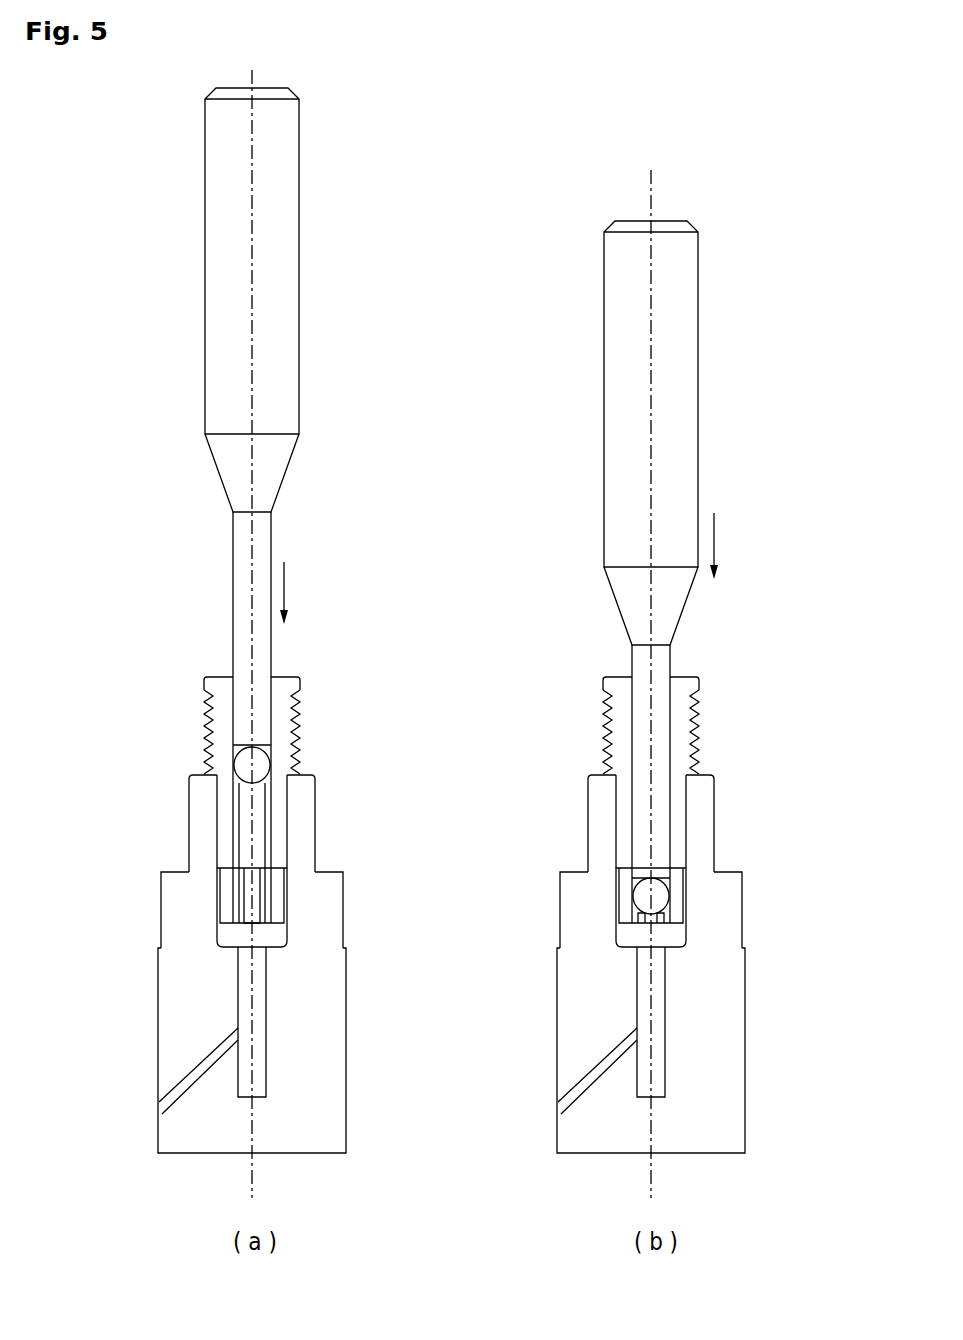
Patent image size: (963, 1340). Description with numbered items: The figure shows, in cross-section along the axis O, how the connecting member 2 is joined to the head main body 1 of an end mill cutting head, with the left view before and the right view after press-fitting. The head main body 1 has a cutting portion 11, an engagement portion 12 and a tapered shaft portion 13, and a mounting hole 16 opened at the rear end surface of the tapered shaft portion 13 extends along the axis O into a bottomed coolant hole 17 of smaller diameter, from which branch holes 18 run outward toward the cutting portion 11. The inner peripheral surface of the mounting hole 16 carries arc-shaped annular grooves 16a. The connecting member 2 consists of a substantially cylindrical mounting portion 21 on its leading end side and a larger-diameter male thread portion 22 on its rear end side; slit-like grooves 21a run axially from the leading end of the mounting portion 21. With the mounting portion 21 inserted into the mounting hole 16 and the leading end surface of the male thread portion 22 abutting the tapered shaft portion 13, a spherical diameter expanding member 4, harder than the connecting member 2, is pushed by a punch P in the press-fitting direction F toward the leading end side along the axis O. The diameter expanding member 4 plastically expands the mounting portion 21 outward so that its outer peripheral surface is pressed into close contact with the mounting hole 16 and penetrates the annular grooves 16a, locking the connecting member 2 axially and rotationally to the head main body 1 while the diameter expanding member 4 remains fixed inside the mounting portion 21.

The head main body 1 is at (386, 964).
The cutting portion 11 is at (152, 1030).
The engagement portion 12 is at (154, 916).
The tapered shaft portion 13 is at (184, 838).
The mounting hole 16 is at (278, 940).
The annular grooves 16a is at (287, 795).
The coolant hole 17 is at (256, 1072).
The branch holes 18 is at (154, 1064).
The connecting member 2 is at (107, 710).
The mounting portion 21 is at (226, 808).
The groove 21a is at (658, 936).
The male thread portion 22 is at (212, 734).
The diameter expanding member 4 is at (262, 762).
The punch P is at (242, 540).
The press-fitting direction F is at (508, 568).
The axis O is at (256, 1192).